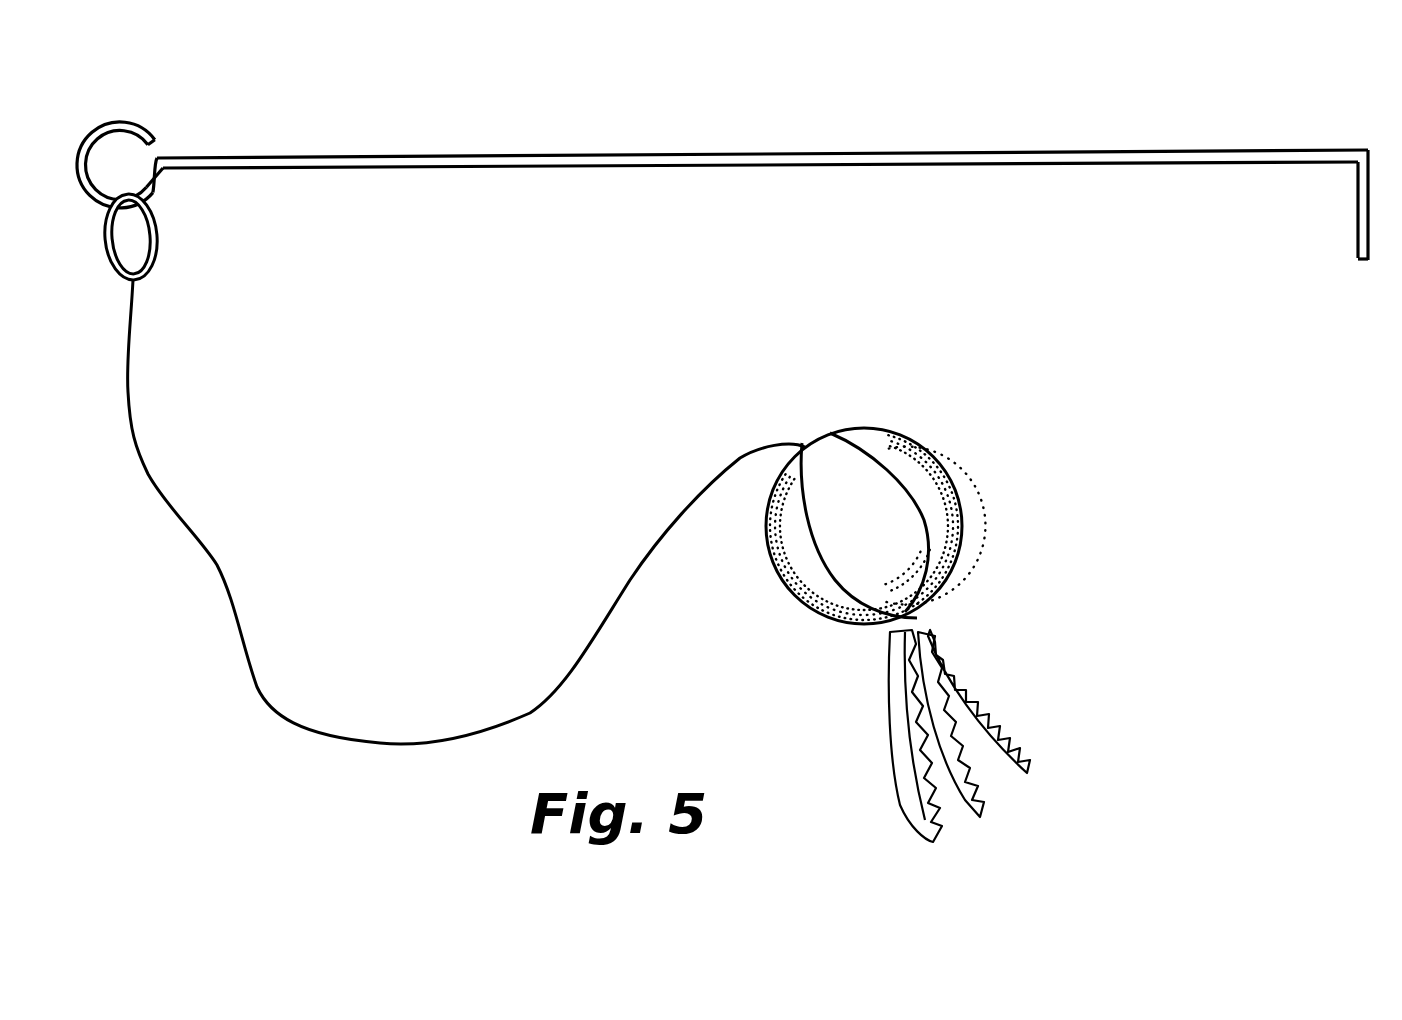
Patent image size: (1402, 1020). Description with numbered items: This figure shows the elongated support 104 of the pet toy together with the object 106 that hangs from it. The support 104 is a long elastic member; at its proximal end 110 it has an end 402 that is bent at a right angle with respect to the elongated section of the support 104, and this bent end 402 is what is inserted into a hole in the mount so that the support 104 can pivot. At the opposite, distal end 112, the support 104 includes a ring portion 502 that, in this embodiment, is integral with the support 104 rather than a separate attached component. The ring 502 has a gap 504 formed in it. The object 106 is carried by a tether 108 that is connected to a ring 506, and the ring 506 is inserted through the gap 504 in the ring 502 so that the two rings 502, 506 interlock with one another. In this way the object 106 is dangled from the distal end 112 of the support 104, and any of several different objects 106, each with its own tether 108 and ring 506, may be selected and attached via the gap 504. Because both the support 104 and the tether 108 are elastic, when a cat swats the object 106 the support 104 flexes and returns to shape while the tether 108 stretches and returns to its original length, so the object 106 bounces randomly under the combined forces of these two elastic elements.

The elongated support 104 is at (773, 153).
The ring portion 502 is at (151, 133).
The gap 504 is at (160, 149).
The distal end 112 is at (162, 180).
The ring 506 is at (157, 250).
The tether 108 is at (240, 599).
The object 106 is at (880, 537).
The proximal end 110 is at (1367, 149).
The end 402 is at (1368, 261).